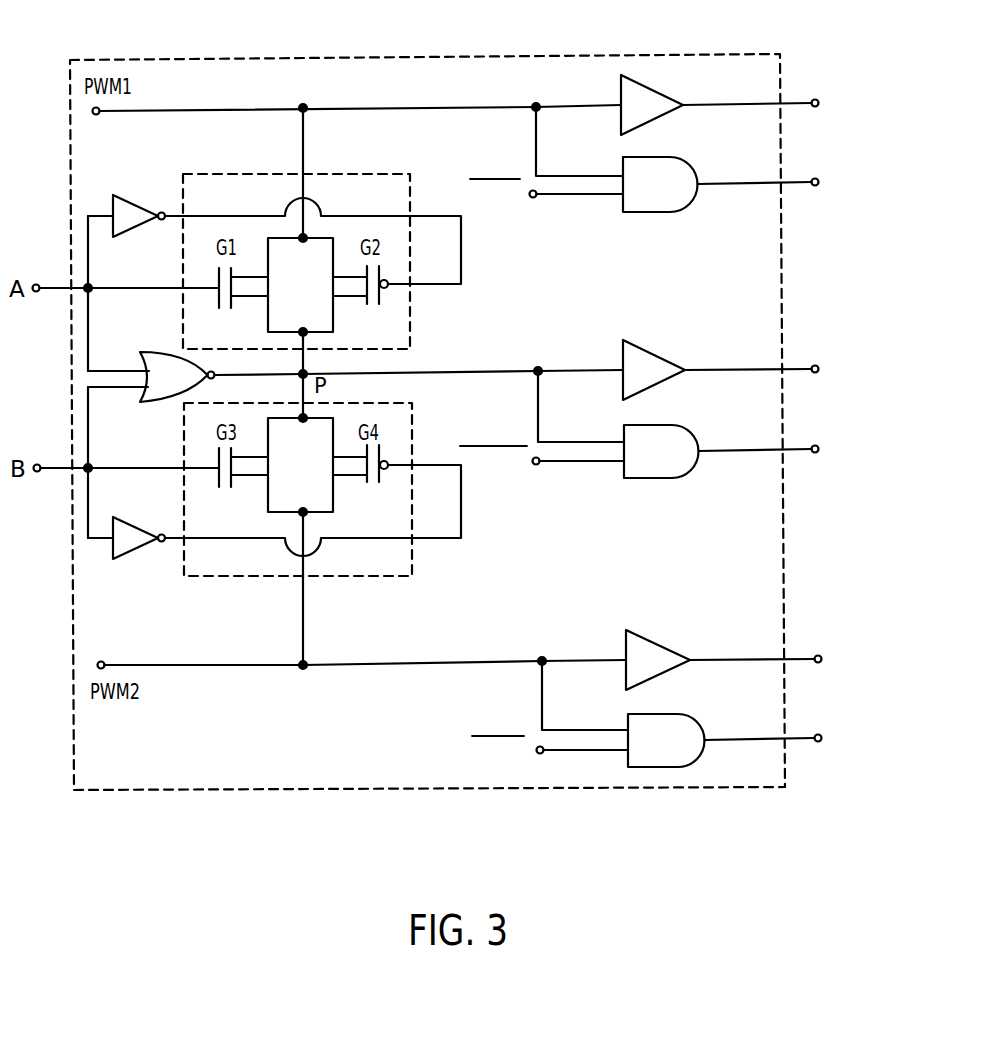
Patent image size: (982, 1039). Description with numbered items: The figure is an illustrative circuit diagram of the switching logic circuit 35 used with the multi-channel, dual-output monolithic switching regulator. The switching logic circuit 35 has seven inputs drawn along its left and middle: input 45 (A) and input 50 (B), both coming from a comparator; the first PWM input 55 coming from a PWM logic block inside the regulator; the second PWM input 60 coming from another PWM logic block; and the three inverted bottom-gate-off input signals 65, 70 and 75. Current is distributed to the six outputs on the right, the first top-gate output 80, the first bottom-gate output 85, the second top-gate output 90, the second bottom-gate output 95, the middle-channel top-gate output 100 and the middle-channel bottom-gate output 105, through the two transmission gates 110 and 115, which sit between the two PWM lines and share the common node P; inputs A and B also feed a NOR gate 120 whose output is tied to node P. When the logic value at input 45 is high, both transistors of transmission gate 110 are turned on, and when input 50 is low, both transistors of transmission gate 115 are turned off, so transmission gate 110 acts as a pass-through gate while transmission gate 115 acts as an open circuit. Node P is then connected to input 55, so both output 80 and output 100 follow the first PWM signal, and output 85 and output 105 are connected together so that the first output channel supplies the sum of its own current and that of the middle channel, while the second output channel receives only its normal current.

The switching logic circuit 35 is at (150, 58).
The input A 45 is at (51, 286).
The input B 50 is at (51, 466).
The input PWM1 55 is at (127, 114).
The input PWM2 60 is at (158, 663).
The input signal BOFF1 (inverted) 65 is at (571, 197).
The input signal BOFFMC (inverted) 70 is at (572, 463).
The input signal BOFF2 (inverted) 75 is at (590, 752).
The output TG1 80 is at (795, 101).
The output BG1 85 is at (795, 181).
The output TG2 90 is at (800, 657).
The output BG2 95 is at (800, 737).
The output TGMC 100 is at (797, 367).
The output BGMC 105 is at (797, 447).
The transmission gate 110 is at (232, 174).
The transmission gate 115 is at (222, 577).
The NOR gate 120 is at (158, 351).